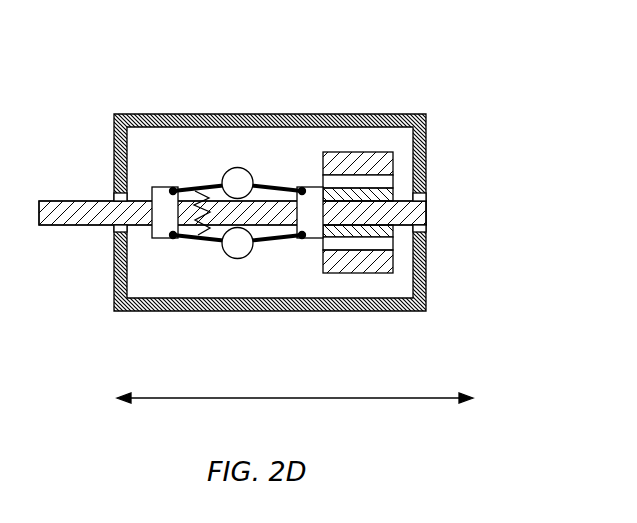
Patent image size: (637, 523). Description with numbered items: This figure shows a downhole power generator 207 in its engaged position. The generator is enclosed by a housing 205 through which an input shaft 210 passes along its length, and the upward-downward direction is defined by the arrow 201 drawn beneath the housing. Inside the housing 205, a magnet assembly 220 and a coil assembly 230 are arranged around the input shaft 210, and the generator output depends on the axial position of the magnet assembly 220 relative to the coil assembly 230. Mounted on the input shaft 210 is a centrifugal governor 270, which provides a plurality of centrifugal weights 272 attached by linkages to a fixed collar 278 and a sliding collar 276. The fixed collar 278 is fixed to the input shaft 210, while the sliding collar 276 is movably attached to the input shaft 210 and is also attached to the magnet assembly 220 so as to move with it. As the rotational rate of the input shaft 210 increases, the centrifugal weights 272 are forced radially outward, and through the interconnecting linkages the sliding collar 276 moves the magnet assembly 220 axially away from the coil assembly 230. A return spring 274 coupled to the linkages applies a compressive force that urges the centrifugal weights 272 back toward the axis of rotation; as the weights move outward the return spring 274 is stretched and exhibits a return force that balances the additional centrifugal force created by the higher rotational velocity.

The arrow 201 is at (250, 396).
The housing 205 is at (125, 114).
The downhole power generator 207 is at (196, 44).
The input shaft 210 is at (80, 210).
The magnet assembly 220 is at (412, 256).
The coil assembly 230 is at (375, 268).
The centrifugal governor 270 is at (236, 210).
The centrifugal weights 272 is at (231, 178).
The return spring 274 is at (205, 241).
The sliding collar 276 is at (310, 235).
The fixed collar 278 is at (155, 228).